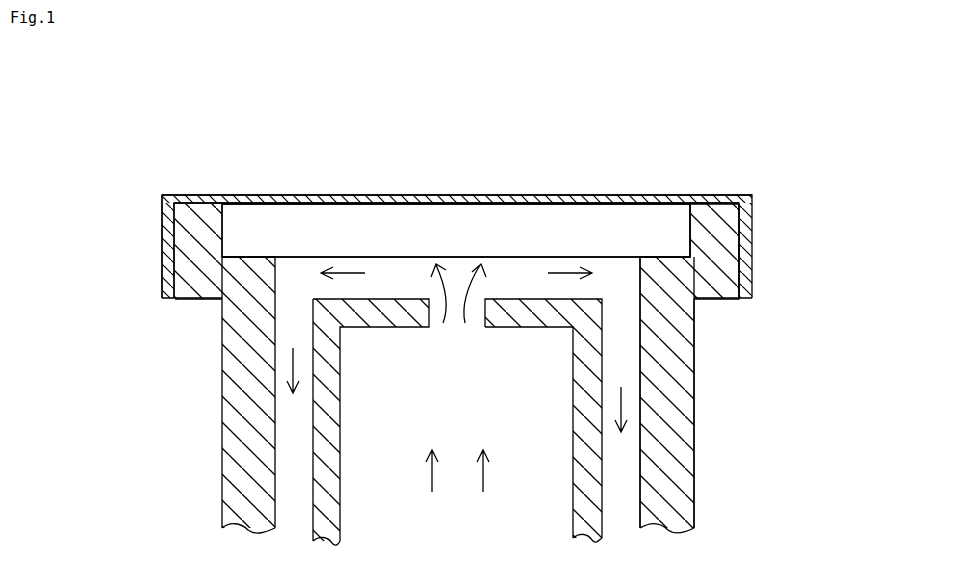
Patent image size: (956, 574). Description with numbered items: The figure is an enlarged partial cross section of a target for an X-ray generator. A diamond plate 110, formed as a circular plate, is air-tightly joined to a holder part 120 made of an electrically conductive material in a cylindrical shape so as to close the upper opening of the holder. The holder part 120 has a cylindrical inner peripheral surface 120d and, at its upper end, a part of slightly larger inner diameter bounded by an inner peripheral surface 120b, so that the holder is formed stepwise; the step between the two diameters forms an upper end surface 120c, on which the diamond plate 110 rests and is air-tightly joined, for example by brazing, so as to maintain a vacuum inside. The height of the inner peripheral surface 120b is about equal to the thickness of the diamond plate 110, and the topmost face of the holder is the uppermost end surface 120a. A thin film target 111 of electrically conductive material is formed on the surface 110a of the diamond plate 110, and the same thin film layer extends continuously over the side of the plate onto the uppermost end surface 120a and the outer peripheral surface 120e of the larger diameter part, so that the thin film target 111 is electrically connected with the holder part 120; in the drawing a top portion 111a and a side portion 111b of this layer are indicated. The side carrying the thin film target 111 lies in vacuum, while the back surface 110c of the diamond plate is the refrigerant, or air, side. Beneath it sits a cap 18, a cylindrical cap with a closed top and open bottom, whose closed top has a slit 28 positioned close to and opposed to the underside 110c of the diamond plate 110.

The diamond plate 110 is at (325, 223).
The surface of the diamond plate 110a is at (592, 197).
The back surface of the diamond plate 110c is at (307, 257).
The thin film target 111 is at (397, 200).
The top wall of cover 111a is at (192, 195).
The side wall of cover 111b is at (165, 236).
The holder part 120 is at (694, 408).
The uppermost end surface 120a is at (712, 196).
The inner peripheral surface of the larger diameter part 120b is at (697, 229).
The upper end surface 120c is at (658, 250).
The cylindrical inner peripheral surface 120d is at (648, 355).
The outer peripheral surface of the larger diameter part 120e is at (752, 243).
The cap 18 is at (320, 437).
The slit 28 is at (485, 327).